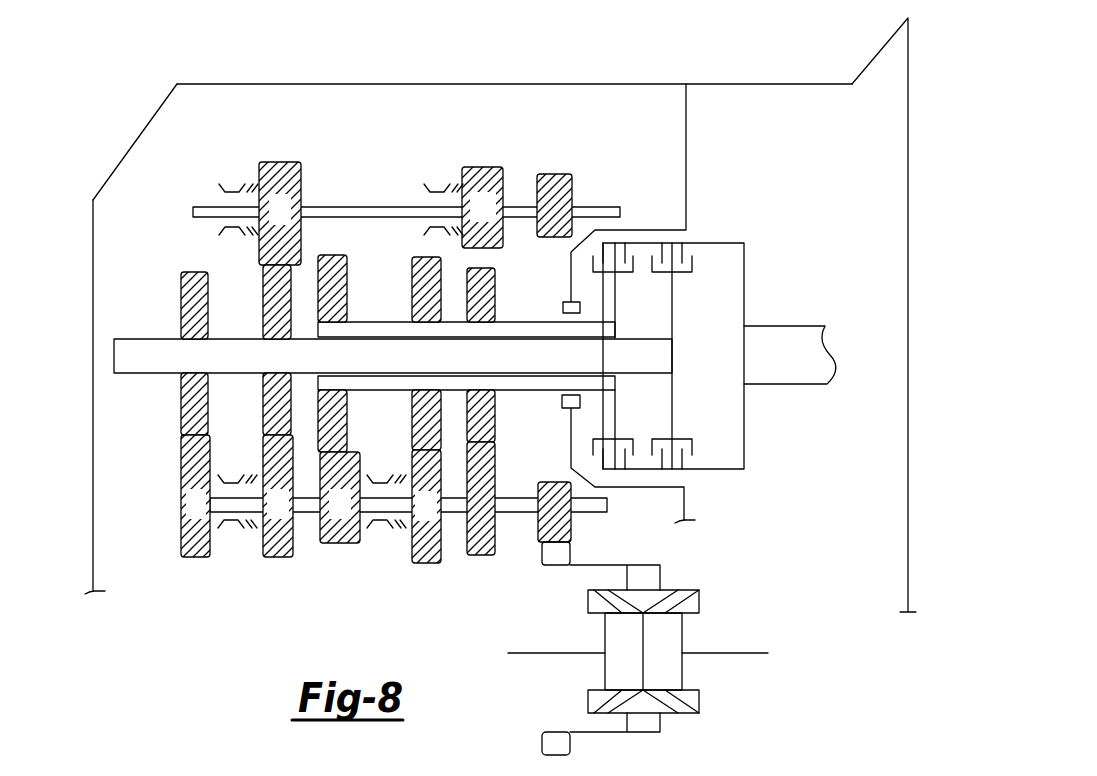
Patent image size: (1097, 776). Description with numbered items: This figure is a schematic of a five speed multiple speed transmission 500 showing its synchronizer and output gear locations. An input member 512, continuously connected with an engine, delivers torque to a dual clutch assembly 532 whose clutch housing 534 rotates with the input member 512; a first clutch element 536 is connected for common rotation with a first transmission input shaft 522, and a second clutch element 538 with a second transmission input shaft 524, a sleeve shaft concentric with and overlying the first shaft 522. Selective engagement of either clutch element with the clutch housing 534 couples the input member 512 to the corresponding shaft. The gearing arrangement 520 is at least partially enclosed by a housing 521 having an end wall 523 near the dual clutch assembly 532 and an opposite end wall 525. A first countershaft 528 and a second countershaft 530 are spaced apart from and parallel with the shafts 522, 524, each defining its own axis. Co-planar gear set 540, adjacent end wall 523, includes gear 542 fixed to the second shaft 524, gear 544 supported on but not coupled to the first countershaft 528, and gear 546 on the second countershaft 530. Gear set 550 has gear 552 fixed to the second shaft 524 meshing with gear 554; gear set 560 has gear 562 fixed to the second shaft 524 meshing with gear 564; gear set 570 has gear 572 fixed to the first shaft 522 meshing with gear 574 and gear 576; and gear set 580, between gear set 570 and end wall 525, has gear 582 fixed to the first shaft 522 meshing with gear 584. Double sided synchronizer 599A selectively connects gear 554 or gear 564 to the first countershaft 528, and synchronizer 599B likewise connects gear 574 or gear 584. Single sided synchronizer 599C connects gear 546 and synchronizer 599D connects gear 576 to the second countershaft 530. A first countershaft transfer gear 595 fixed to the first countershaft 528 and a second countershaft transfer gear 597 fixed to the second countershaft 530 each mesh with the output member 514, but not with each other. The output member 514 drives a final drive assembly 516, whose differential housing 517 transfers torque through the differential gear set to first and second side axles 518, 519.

The multiple speed transmission 500 is at (758, 53).
The input shaft or member 512 is at (782, 342).
The output gear or member 514 is at (553, 562).
The final drive assembly 516 is at (662, 641).
The differential housing 517 is at (655, 725).
The first side axle 518 is at (753, 652).
The second side axle 519 is at (557, 653).
The gearing arrangement 520 is at (188, 108).
The housing 521 is at (720, 83).
The first transmission input shaft or member 522 is at (648, 338).
The end wall 523 is at (685, 145).
The second transmission input shaft or member 524 is at (527, 327).
The end wall 525 is at (89, 213).
The first countershaft 528 is at (513, 508).
The second countershaft 530 is at (611, 206).
The dual clutch assembly 532 is at (708, 326).
The clutch housing 534 is at (744, 429).
The first clutch element or hub 536 is at (672, 412).
The second clutch element or hub 538 is at (615, 405).
The co-planar gear set 540 is at (510, 456).
The gear 542 is at (490, 413).
The gear 544 is at (490, 457).
The gear 546 is at (503, 178).
The co-planar gear set 550 is at (419, 455).
The gear 552 is at (412, 306).
The gear 554 is at (433, 560).
The co-planar gear set 560 is at (352, 434).
The gear 562 is at (322, 253).
The gear 564 is at (350, 473).
The co-planar gear set 570 is at (256, 452).
The gear 572 is at (263, 302).
The gear 574 is at (263, 455).
The gear 576 is at (297, 192).
The co-planar gear set 580 is at (167, 447).
The gear 582 is at (181, 300).
The gear 584 is at (182, 460).
The first countershaft transfer gear 595 is at (560, 522).
The second countershaft transfer gear 597 is at (552, 178).
The synchronizer assembly 599A is at (378, 530).
The synchronizer assembly 599B is at (233, 538).
The synchronizer assembly 599C is at (443, 177).
The synchronizer assembly 599D is at (233, 182).